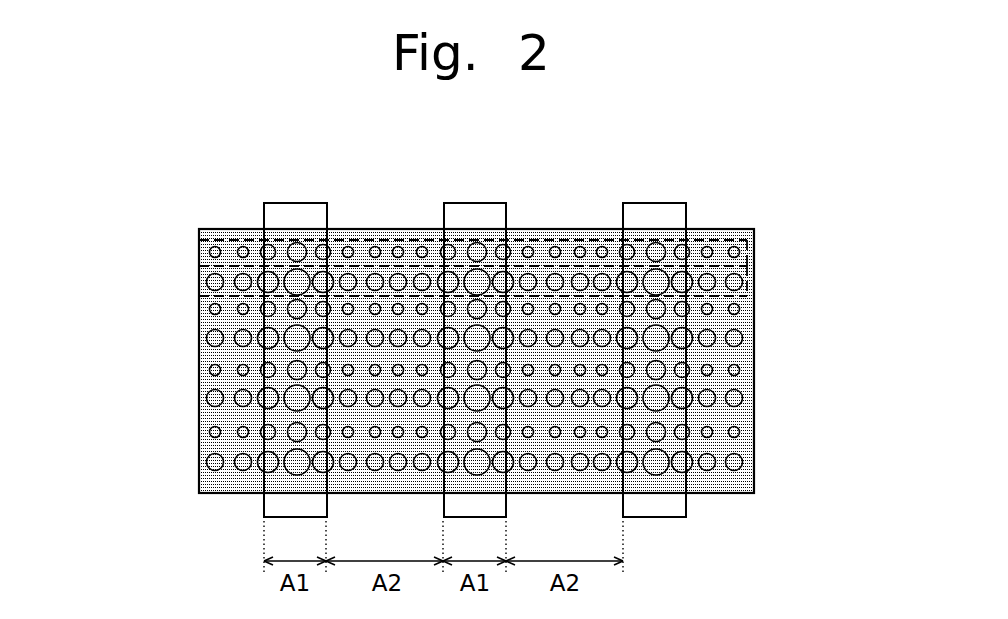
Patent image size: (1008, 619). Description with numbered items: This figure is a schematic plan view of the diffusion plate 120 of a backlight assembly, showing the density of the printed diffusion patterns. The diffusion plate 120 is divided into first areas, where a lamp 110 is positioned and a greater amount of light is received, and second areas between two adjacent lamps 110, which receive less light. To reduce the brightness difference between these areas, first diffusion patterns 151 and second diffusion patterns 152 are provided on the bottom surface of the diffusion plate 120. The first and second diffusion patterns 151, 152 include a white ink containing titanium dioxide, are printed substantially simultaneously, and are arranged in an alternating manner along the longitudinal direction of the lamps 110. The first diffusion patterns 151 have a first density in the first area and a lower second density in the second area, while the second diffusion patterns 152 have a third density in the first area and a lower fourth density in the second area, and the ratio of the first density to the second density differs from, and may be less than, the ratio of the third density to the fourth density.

The diffusion plate 120 is at (755, 446).
The lamp 110 is at (668, 518).
The first diffusion pattern 151 is at (191, 263).
The second diffusion pattern 152 is at (191, 298).